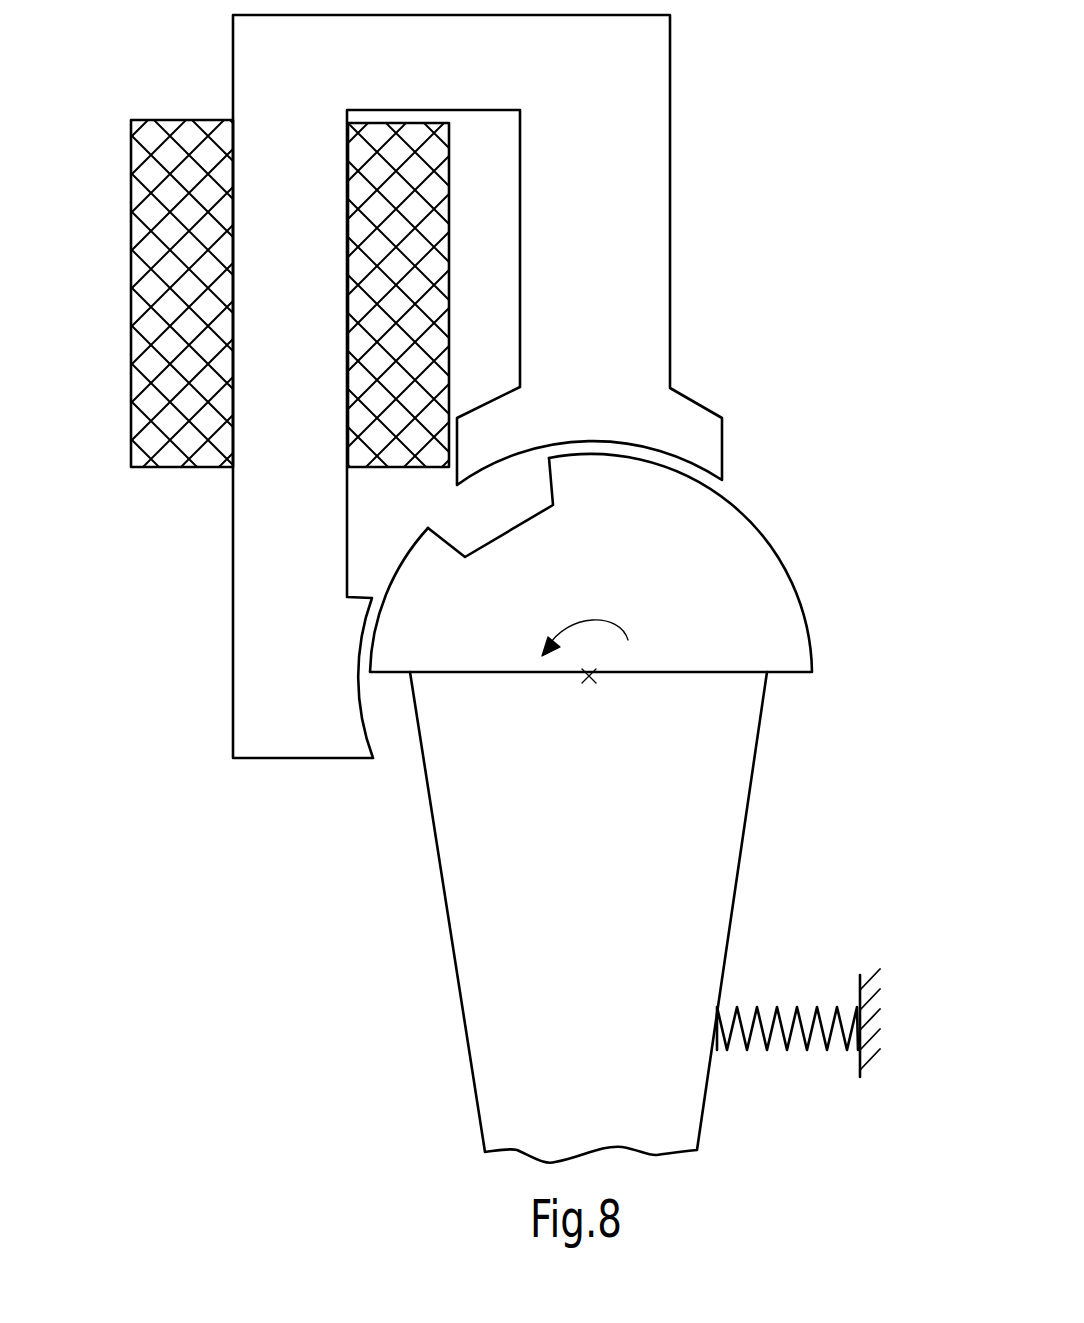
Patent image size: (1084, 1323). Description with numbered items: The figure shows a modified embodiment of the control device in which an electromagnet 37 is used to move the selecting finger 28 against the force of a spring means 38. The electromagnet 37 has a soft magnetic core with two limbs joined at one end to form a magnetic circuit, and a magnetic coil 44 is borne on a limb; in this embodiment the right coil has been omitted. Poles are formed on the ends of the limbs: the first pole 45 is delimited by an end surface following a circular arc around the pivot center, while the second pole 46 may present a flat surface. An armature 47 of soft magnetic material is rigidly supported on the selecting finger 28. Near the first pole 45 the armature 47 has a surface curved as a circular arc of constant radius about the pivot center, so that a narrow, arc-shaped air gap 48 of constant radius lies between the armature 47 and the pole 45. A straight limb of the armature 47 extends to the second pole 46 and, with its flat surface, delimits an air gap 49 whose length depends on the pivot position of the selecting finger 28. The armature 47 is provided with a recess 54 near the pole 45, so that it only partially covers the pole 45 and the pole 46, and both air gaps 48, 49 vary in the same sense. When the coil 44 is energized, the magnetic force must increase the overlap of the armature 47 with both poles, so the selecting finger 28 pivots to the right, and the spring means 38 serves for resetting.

The selecting finger 28 is at (695, 887).
The electromagnet 37 is at (187, 527).
The spring means 38 is at (797, 978).
The magnetic coil 44 is at (432, 233).
The first pole 45 is at (618, 443).
The second pole 46 is at (362, 673).
The armature 47 is at (650, 557).
The air gap 48 is at (575, 445).
The air gap 49 is at (364, 633).
The recess 54 is at (495, 498).